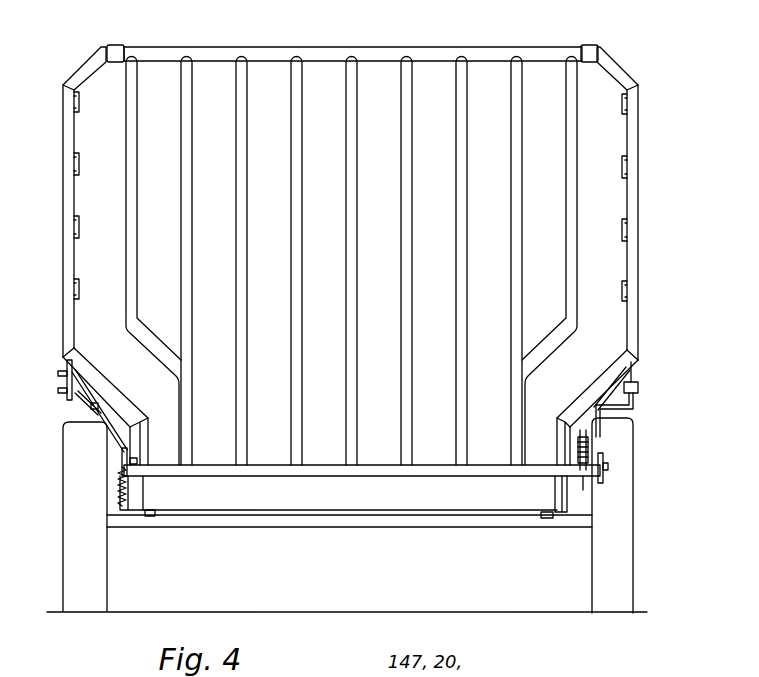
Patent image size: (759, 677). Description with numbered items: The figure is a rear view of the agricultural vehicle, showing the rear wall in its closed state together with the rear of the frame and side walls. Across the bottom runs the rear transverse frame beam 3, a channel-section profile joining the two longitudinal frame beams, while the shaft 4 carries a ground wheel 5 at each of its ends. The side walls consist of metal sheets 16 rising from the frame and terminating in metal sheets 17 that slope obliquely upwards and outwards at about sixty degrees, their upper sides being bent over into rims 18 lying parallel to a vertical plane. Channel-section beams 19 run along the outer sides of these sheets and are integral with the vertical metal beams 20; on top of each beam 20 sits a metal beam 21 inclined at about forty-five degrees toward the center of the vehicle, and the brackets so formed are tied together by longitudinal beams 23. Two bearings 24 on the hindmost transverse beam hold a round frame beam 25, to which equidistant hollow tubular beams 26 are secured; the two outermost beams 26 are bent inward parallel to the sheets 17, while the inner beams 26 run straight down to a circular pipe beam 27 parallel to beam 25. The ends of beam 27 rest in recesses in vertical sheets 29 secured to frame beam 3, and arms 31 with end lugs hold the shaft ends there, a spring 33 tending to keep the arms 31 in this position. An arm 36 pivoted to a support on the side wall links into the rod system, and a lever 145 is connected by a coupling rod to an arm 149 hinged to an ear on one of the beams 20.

The frame beam 3 is at (211, 506).
The shaft 4 is at (303, 523).
The ground wheel 5 is at (96, 554).
The metal sheet 16 is at (146, 429).
The metal sheet 17 is at (104, 386).
The bent-over rim 18 is at (75, 349).
The beam 19 is at (122, 411).
The vertical metal beam 20 is at (63, 218).
The metal beam 21 is at (83, 66).
The beam 23 is at (83, 101).
The bearing 24 is at (116, 45).
The round frame beam 25 is at (335, 47).
The beam 26 is at (291, 130).
The beam 27 is at (385, 468).
The vertical sheet 29 is at (143, 481).
The arm 31 is at (120, 461).
The spring 33 is at (118, 486).
The arm 36 is at (62, 372).
The lever 145 is at (602, 407).
The arm 149 is at (640, 381).